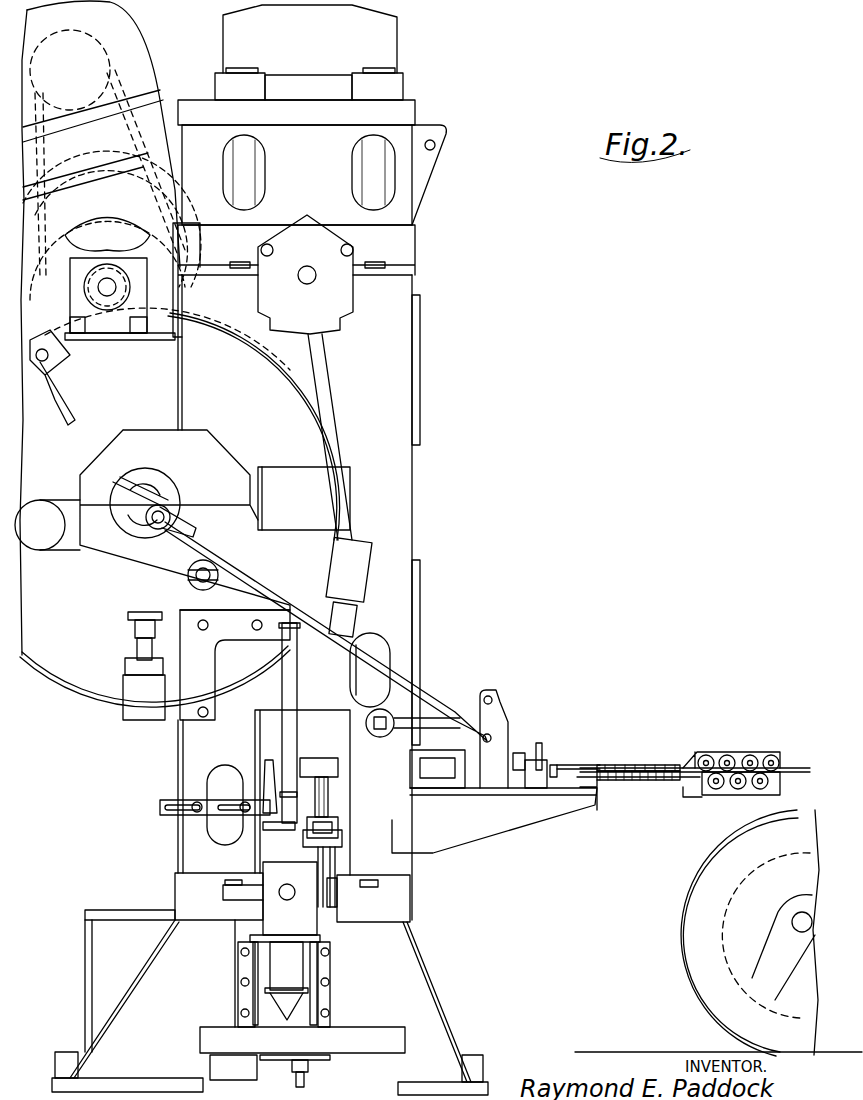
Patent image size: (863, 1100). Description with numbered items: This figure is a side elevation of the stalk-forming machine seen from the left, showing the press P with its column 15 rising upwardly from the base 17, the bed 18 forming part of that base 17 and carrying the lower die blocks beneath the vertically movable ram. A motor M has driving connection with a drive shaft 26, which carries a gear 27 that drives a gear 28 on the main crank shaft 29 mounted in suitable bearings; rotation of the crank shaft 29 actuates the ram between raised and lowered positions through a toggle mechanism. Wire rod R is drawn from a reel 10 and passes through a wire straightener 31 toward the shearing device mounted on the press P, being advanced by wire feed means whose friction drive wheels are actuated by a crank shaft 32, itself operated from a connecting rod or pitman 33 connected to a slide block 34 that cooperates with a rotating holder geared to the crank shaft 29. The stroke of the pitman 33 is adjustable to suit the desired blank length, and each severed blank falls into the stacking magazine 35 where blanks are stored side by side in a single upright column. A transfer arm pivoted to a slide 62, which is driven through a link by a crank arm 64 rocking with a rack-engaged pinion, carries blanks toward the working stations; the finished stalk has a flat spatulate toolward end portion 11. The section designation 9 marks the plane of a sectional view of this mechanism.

The motor M is at (118, 40).
The press P is at (490, 203).
The column 15 is at (383, 378).
The gear 27 is at (85, 280).
The drive shaft 26 is at (108, 288).
The gear 28 is at (233, 328).
The slide block 34 is at (160, 505).
The crank shaft 29 is at (150, 520).
The toolward end portion 11 is at (285, 672).
The section line 9 is at (370, 675).
The connecting rod or pitman 33 is at (400, 675).
The crank shaft 32 is at (492, 713).
The wire straightener 31 is at (665, 765).
The wire rod R is at (792, 765).
The reel 10 is at (708, 926).
The stacking unit or magazine 35 is at (339, 791).
The slide 62 is at (343, 840).
The crank arm 64 is at (323, 868).
The bed 18 is at (400, 897).
The base 17 is at (388, 975).